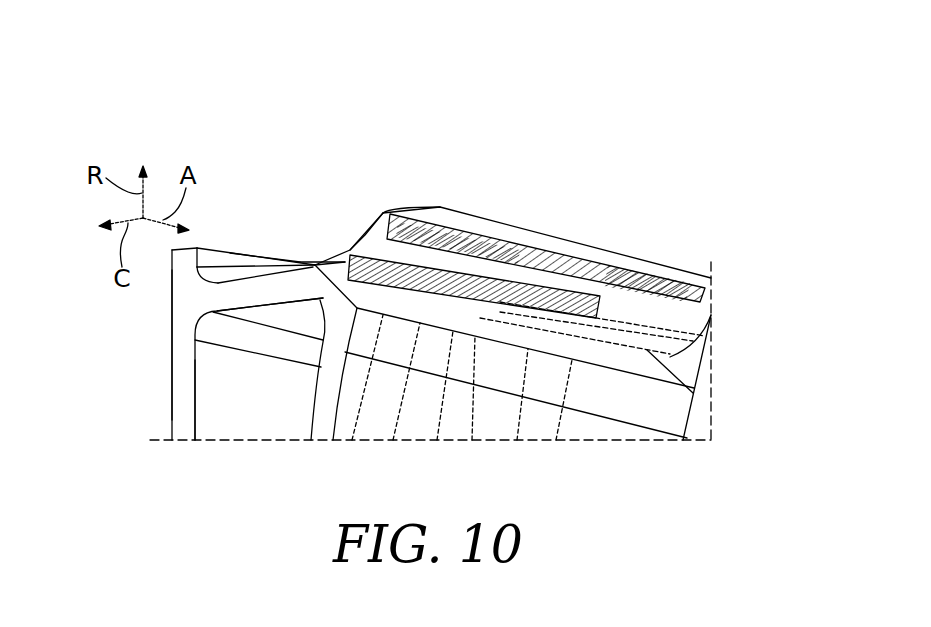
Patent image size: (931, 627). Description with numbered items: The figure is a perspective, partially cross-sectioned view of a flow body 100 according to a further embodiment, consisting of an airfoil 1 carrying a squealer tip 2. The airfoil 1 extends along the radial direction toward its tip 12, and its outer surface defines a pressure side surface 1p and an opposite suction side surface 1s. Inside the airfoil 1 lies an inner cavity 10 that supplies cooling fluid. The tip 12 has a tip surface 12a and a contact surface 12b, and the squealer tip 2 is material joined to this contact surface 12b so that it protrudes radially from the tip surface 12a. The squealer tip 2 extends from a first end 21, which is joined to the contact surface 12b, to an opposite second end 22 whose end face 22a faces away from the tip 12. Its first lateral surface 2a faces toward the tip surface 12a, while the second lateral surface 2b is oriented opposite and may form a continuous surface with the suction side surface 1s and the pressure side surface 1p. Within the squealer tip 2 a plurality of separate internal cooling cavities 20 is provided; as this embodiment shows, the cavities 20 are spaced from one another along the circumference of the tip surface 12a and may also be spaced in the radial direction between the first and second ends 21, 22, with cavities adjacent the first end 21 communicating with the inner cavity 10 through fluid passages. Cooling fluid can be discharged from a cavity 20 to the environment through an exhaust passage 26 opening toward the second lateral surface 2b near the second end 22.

The airfoil 1 is at (172, 399).
The suction side surface 1s is at (171, 352).
The pressure side surface 1p is at (594, 430).
The inner cavity 10 is at (246, 400).
The tip 12 is at (219, 292).
The tip surface 12a is at (306, 262).
The contact surface 12b is at (338, 262).
The squealer tip 2 is at (711, 340).
The first lateral surface 2a is at (358, 238).
The second lateral surface 2b is at (690, 366).
The internal cooling cavities 20 is at (348, 443).
The first end 21 is at (317, 303).
The second end 22 is at (522, 222).
The end face 22a is at (400, 209).
The exhaust passage 26 is at (458, 212).
The flow body 100 is at (628, 151).